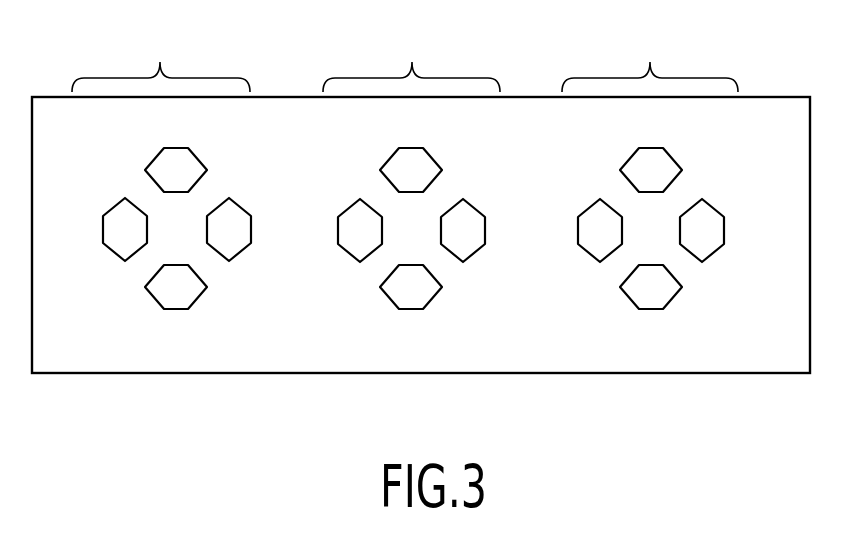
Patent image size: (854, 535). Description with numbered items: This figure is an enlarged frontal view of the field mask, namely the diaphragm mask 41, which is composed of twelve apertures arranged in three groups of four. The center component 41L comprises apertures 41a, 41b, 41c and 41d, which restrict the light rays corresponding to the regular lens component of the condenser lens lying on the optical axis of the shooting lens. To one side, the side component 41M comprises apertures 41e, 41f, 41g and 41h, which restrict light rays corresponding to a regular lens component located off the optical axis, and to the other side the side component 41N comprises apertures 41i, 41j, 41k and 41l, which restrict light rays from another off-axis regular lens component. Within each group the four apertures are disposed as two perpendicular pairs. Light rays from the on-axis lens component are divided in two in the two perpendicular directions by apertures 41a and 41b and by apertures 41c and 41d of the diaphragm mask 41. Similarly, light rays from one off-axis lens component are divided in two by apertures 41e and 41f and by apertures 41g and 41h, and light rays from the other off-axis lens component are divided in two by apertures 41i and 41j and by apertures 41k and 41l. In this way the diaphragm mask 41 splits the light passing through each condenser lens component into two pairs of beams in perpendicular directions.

The diaphragm mask 41 is at (638, 373).
The side component 41M is at (161, 60).
The center component 41L is at (411, 60).
The side component 41N is at (650, 60).
The aperture 41a is at (338, 237).
The aperture 41b is at (486, 195).
The aperture 41c is at (384, 166).
The aperture 41d is at (386, 297).
The aperture 41e is at (104, 237).
The aperture 41f is at (252, 195).
The aperture 41g is at (148, 166).
The aperture 41h is at (150, 296).
The aperture 41i is at (578, 237).
The aperture 41j is at (722, 195).
The aperture 41k is at (625, 166).
The aperture 41l is at (627, 297).